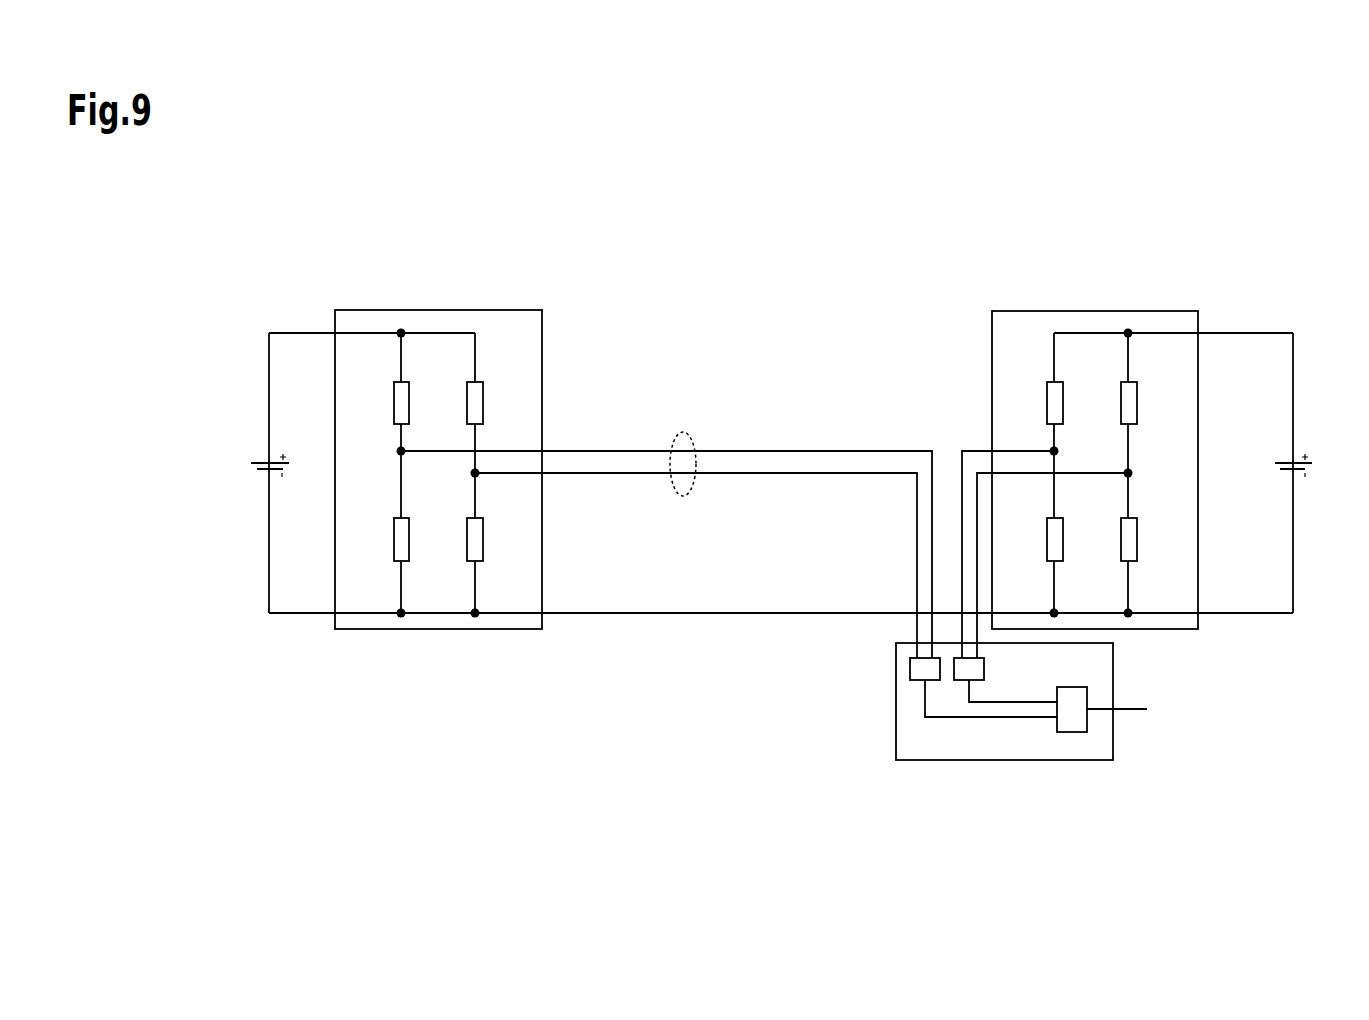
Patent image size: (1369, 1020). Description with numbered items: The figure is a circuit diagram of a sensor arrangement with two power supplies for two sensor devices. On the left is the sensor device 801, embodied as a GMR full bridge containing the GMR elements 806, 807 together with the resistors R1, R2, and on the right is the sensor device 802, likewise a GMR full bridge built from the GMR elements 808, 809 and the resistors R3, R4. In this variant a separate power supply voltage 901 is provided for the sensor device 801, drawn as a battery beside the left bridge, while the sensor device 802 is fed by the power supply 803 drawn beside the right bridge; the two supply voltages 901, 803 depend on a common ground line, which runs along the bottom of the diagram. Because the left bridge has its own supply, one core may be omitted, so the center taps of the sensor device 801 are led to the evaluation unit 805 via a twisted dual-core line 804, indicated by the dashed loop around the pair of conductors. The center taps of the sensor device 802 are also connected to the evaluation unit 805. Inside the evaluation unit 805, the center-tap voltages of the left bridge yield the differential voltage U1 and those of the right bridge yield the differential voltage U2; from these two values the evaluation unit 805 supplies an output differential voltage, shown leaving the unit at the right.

The sensor device 801 is at (378, 310).
The sensor device 802 is at (1025, 311).
The power supply 803 is at (1318, 466).
The twisted dual-core line 804 is at (683, 432).
The evaluation unit 805 is at (1006, 701).
The GMR element 806 is at (376, 403).
The GMR element 807 is at (497, 539).
The GMR element 808 is at (1029, 403).
The GMR element 809 is at (1151, 539).
The power supply voltage 901 is at (244, 466).
The resistor R1 is at (496, 403).
The resistor R2 is at (378, 539).
The resistor R3 is at (1149, 403).
The resistor R4 is at (1031, 539).
The differential voltage U1 is at (1035, 732).
The differential voltage U2 is at (1035, 687).